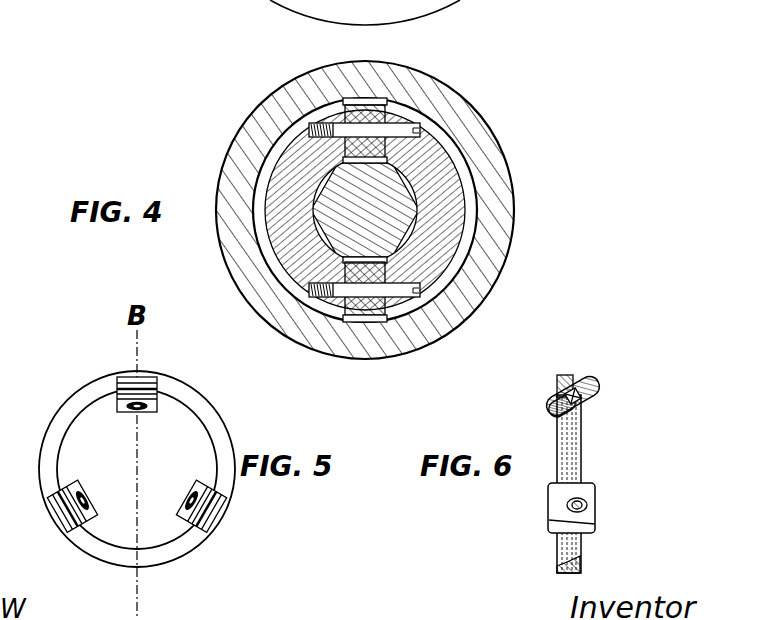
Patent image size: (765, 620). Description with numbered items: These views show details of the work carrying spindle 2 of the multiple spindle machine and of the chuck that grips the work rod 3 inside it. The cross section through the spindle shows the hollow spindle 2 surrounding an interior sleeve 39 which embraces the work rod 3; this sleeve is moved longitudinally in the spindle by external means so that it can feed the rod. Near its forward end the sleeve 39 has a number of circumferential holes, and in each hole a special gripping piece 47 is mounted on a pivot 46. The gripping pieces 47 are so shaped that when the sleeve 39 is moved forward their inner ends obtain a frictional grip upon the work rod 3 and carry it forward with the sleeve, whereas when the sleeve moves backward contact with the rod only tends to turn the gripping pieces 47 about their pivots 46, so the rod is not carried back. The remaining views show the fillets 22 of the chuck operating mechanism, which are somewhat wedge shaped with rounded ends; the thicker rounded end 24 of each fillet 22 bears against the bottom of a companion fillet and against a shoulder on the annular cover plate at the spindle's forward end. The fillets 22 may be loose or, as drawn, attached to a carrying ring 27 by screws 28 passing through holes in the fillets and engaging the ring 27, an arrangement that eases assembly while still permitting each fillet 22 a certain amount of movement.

In FIG. 4, the work carrying spindle 2 is at (478, 121).
In FIG. 4, the work rod 3 is at (337, 198).
In FIG. 4, the interior sleeve 39 is at (298, 152).
In FIG. 4, the pivot 46 is at (398, 128).
In FIG. 4, the gripping piece 47 is at (350, 98).
In FIG. 5, the fillet 22 is at (158, 398).
In FIG. 6, the fillet 22 is at (557, 403).
In FIG. 5, the thicker rounded end 24 is at (218, 513).
In FIG. 6, the thicker rounded end 24 is at (597, 386).
In FIG. 5, the carrying ring 27 is at (73, 400).
In FIG. 6, the carrying ring 27 is at (585, 548).
In FIG. 6, the screw 28 is at (576, 383).